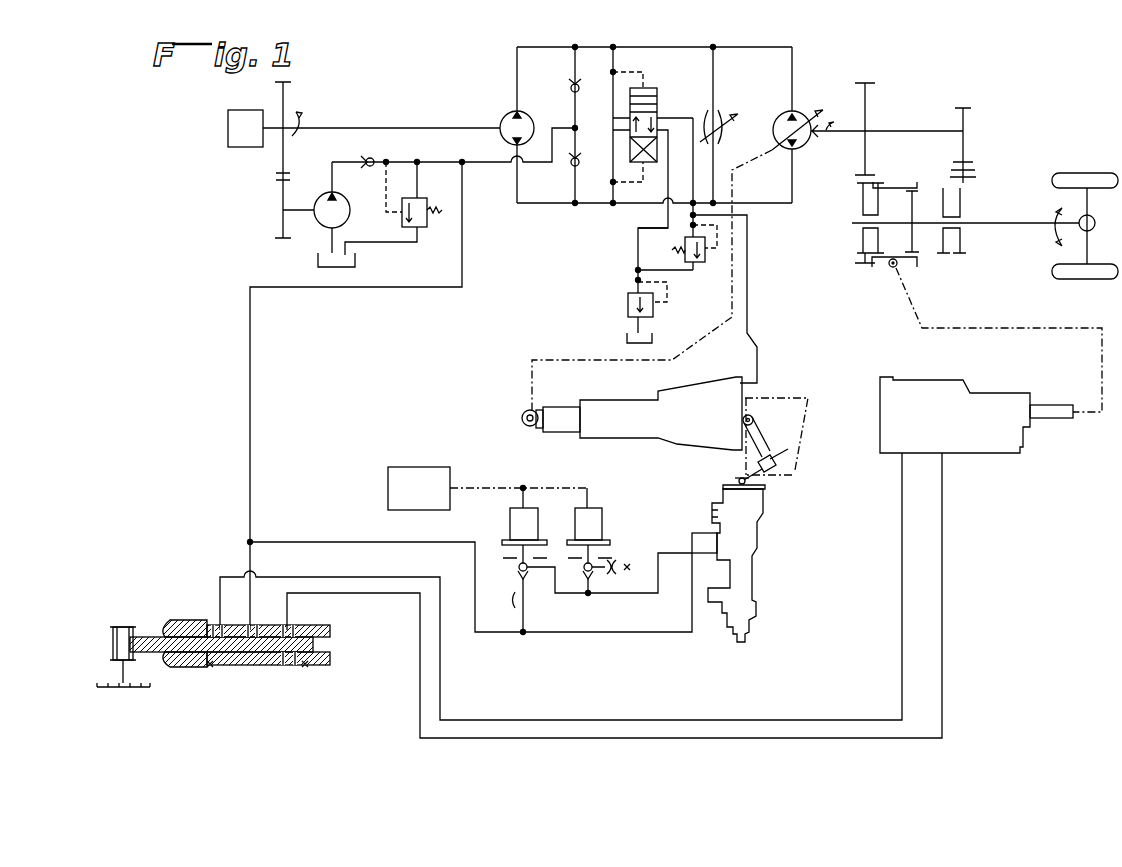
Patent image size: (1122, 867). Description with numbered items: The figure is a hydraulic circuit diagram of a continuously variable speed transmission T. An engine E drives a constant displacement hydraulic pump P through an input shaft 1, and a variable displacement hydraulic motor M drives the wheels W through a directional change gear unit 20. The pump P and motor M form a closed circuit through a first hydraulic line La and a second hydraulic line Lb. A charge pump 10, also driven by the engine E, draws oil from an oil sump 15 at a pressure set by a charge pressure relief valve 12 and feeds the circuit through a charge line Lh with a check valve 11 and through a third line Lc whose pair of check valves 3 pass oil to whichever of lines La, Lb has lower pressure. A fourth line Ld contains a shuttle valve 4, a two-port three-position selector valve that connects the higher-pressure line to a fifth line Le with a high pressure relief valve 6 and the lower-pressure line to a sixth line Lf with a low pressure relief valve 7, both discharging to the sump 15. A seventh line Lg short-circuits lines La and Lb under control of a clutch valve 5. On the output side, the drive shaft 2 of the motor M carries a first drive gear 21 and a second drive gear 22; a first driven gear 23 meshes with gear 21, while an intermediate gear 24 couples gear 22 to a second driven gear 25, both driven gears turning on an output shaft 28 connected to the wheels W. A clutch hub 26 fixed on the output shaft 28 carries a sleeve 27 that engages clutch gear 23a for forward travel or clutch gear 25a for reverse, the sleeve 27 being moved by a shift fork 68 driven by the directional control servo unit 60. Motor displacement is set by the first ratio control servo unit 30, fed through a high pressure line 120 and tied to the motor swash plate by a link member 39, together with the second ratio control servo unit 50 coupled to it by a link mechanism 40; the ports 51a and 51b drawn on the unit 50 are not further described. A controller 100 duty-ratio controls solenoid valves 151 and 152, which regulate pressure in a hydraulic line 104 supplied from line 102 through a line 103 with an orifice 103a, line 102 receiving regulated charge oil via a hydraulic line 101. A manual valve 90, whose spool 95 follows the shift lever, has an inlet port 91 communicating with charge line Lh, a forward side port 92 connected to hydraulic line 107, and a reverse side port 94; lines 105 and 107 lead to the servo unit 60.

The engine E is at (228, 132).
The input shaft 1 is at (432, 127).
The hydraulic pump P is at (503, 123).
The charge pump 10 is at (348, 215).
The check valve 11 is at (366, 166).
The charge pressure relief valve 12 is at (424, 198).
The oil sump 15 is at (360, 262).
The hydraulic line 101 is at (462, 251).
The charge hydraulic line Lh is at (492, 166).
The continuously variable speed transmission T is at (658, 120).
The second hydraulic line Lb is at (548, 47).
The first hydraulic line La is at (546, 203).
The third hydraulic line Lc is at (580, 114).
The fourth hydraulic line Ld is at (620, 58).
The fifth hydraulic line Le is at (688, 118).
The seventh hydraulic line Lg is at (717, 76).
The sixth hydraulic line Lf is at (649, 228).
The check valve 3 is at (568, 86).
The shuttle valve 4 is at (659, 90).
The clutch valve 5 is at (727, 134).
The hydraulic motor M is at (802, 108).
The drive shaft 2 is at (838, 130).
The directional change gear unit 20 is at (951, 174).
The first drive gear 21 is at (865, 118).
The second drive gear 22 is at (967, 124).
The first driven gear 23 is at (861, 190).
The clutch gear 23a is at (894, 184).
The intermediate gear 24 is at (965, 170).
The second driven gear 25 is at (964, 240).
The clutch gear 25a is at (969, 188).
The clutch hub 26 is at (914, 186).
The sleeve 27 is at (915, 268).
The output shaft 28 is at (1032, 222).
The wheels W is at (1096, 166).
The shift fork 68 is at (1066, 326).
The directional control servo unit 60 is at (974, 372).
The link member 39 is at (742, 260).
The high pressure line 120 is at (747, 298).
The high pressure relief valve 6 is at (678, 245).
The low pressure relief valve 7 is at (654, 308).
The first ratio control servo unit 30 is at (642, 445).
The link mechanism 40 is at (778, 433).
The second ratio control servo unit 50 is at (713, 558).
The port 51a is at (712, 521).
The port 51b is at (708, 553).
The controller 100 is at (435, 467).
The solenoid valve 151 is at (535, 528).
The solenoid valve 152 is at (605, 528).
The hydraulic line 102 is at (400, 542).
The hydraulic line 103 is at (522, 616).
The orifice 103a is at (530, 610).
The hydraulic line 104 is at (645, 594).
The hydraulic line 105 is at (443, 689).
The hydraulic line 107 is at (943, 637).
The manual valve 90 is at (213, 656).
The inlet port 91 is at (246, 626).
The forward side port 92 is at (284, 626).
The reverse side port 94 is at (213, 626).
The spool 95 is at (284, 666).